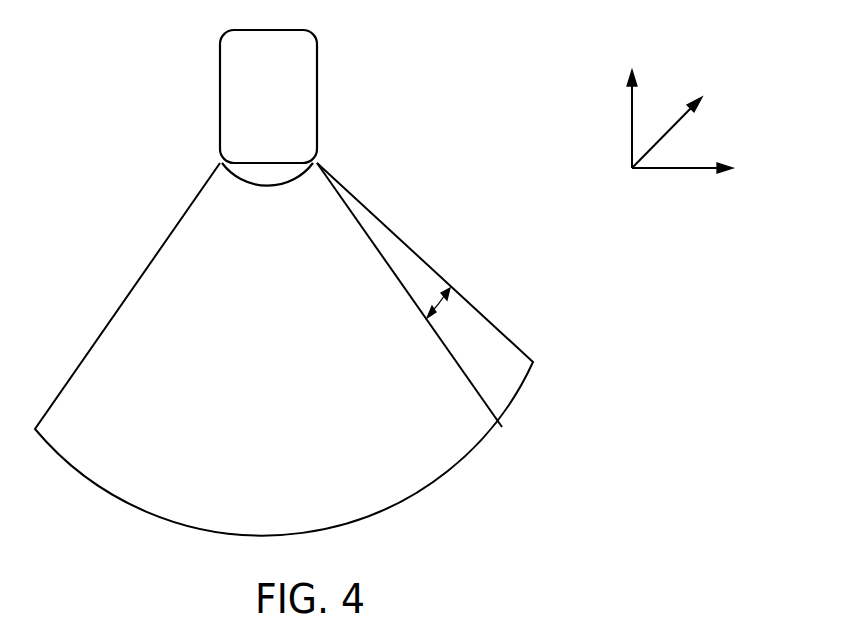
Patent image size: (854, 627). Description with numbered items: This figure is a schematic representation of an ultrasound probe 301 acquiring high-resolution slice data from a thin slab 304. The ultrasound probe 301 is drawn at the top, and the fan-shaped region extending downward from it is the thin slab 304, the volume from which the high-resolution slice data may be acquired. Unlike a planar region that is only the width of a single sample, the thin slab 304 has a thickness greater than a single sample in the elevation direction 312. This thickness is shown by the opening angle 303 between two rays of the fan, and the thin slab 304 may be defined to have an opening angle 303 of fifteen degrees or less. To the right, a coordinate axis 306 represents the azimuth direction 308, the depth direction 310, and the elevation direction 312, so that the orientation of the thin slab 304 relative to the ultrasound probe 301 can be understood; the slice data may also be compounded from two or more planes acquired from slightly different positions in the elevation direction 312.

The ultrasound probe 301 is at (319, 92).
The opening angle 303 is at (455, 295).
The thin slab 304 is at (344, 282).
The coordinate axis 306 is at (651, 172).
The azimuth direction 308 is at (680, 173).
The depth direction 310 is at (630, 112).
The elevation direction 312 is at (622, 181).